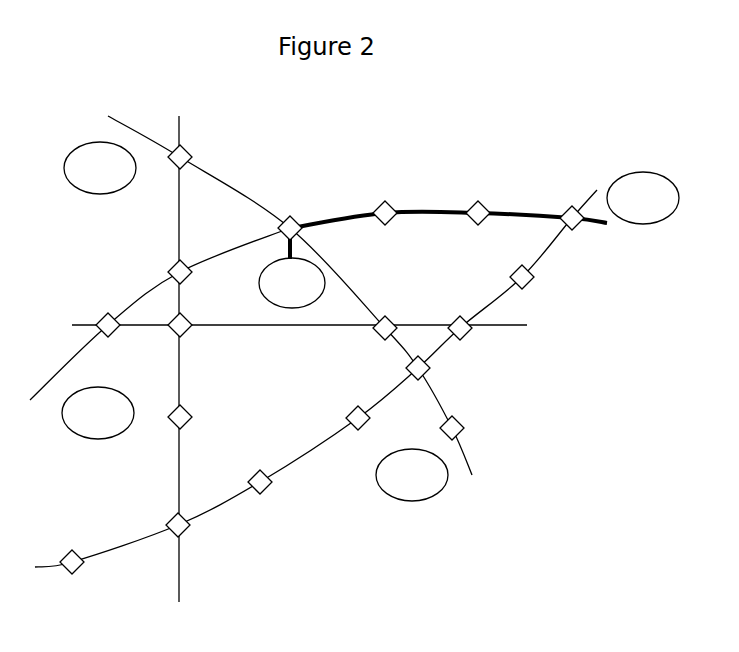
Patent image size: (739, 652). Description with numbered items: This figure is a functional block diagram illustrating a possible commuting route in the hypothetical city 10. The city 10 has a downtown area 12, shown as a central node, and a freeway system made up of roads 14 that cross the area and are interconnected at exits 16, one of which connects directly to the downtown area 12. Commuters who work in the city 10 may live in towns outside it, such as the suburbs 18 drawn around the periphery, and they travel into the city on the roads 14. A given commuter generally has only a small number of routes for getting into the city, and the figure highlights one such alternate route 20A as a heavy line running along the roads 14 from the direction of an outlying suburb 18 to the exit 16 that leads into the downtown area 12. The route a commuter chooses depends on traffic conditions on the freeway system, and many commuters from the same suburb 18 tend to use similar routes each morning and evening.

The hypothetical city 10 is at (406, 129).
The downtown area 12 is at (292, 268).
The roads 14 is at (225, 177).
The exits 16 is at (296, 221).
The suburbs 18 is at (370, 321).
The alternate route 20A is at (425, 213).